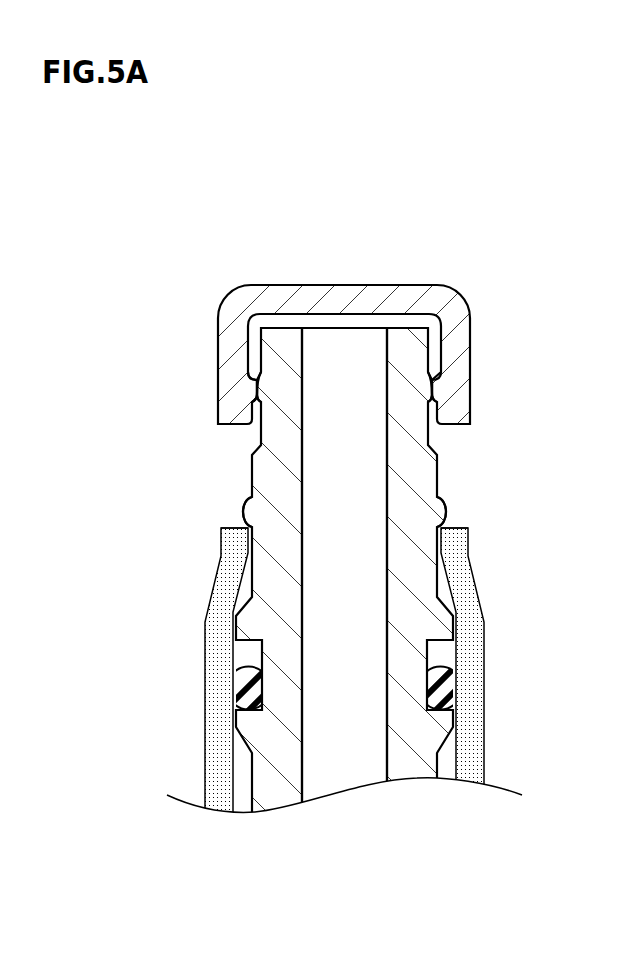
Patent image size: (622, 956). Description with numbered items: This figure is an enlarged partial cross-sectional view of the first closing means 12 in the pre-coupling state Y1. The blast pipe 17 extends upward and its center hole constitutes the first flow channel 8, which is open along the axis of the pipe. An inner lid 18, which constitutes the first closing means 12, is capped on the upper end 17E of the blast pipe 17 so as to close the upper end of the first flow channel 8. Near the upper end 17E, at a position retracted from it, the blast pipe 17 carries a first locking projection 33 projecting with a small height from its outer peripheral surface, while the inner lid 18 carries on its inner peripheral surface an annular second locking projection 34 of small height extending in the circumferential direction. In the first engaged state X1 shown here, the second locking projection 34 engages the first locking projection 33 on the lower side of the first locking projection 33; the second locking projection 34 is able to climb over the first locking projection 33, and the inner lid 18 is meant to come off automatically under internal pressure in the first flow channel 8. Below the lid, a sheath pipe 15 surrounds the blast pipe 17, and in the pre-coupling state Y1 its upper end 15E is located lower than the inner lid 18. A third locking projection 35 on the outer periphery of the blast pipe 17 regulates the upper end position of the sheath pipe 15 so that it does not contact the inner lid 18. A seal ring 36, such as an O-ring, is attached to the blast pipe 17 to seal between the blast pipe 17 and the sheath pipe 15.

The first closing means 12 is at (297, 300).
The inner lid 18 is at (326, 316).
The blast pipe 17 is at (417, 735).
The upper end of the blast pipe 17E is at (404, 328).
The first flow channel 8 is at (387, 505).
The first locking projection 33 is at (425, 385).
The second locking projection 34 is at (427, 408).
The third locking projection 35 is at (242, 497).
The sheath pipe 15 is at (217, 675).
The upper end of the sheath pipe 15E is at (233, 525).
The seal ring 36 is at (238, 703).
The pre-coupling state Y1 is at (492, 292).
The first engaged state X1 is at (480, 405).